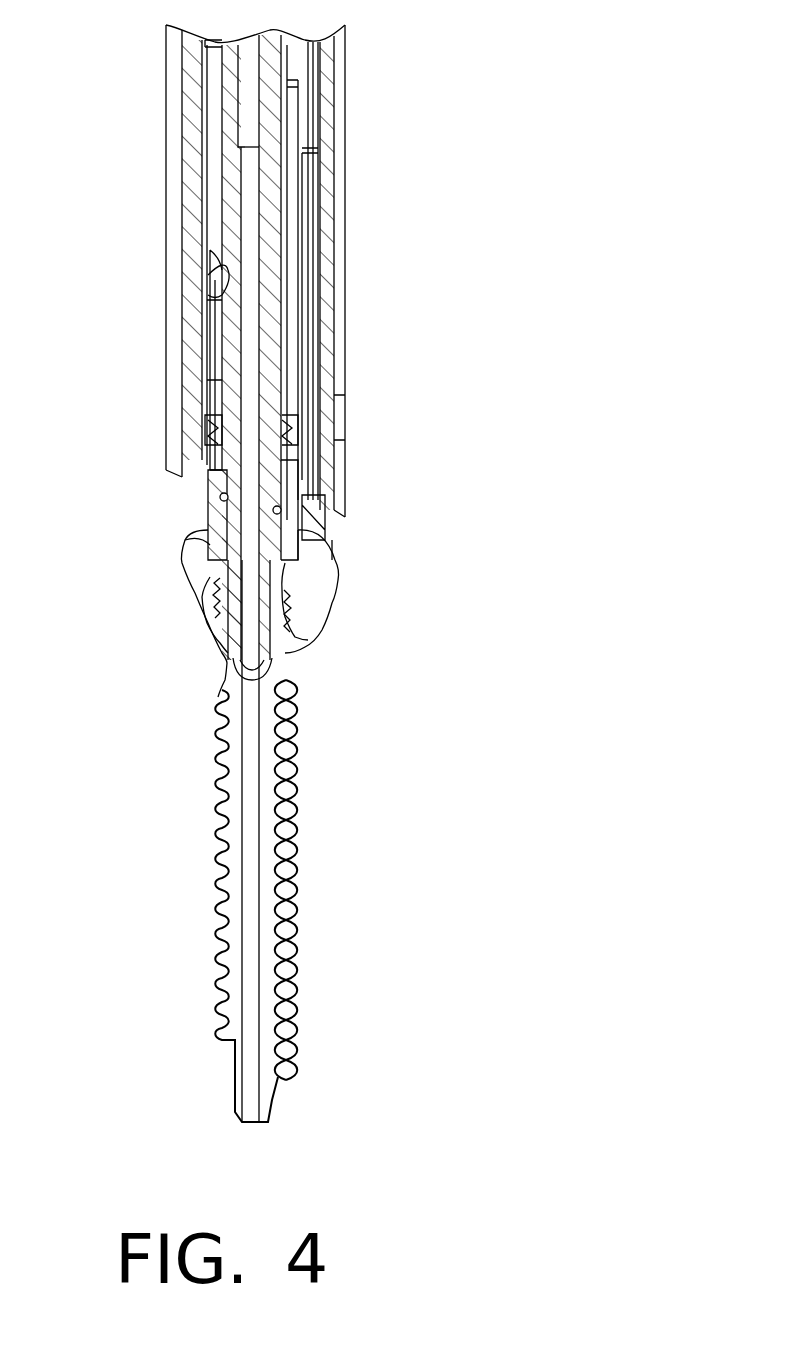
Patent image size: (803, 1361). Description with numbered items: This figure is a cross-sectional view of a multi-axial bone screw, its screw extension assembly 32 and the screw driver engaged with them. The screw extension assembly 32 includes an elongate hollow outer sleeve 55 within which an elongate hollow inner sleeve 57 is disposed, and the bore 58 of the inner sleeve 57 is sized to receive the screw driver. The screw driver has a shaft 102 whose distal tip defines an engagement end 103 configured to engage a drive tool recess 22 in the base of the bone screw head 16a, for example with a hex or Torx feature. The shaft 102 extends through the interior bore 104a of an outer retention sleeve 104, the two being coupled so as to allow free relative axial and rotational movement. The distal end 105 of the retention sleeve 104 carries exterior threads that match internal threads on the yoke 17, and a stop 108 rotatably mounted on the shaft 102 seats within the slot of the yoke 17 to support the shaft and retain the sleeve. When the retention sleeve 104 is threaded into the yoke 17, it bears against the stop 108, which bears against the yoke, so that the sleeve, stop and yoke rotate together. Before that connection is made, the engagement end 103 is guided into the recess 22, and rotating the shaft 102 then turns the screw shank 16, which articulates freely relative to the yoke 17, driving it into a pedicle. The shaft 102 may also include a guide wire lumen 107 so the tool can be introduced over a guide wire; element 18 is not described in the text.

The screw shank 16 is at (300, 680).
The bone screw head 16a is at (195, 612).
The yoke 17 is at (325, 515).
The gripping jaw 18 is at (190, 555).
The drive tool recess 22 is at (225, 683).
The screw extension assembly 32 is at (340, 435).
The outer sleeve 55 is at (342, 157).
The inner sleeve 57 is at (335, 208).
The bore 58 is at (300, 258).
The shaft 102 is at (262, 365).
The engagement end 103 is at (300, 655).
The outer retention sleeve 104 is at (200, 320).
The interior bore 104a is at (225, 265).
The distal end 105 is at (212, 432).
The guide wire lumen 107 is at (227, 178).
The stop 108 is at (215, 505).